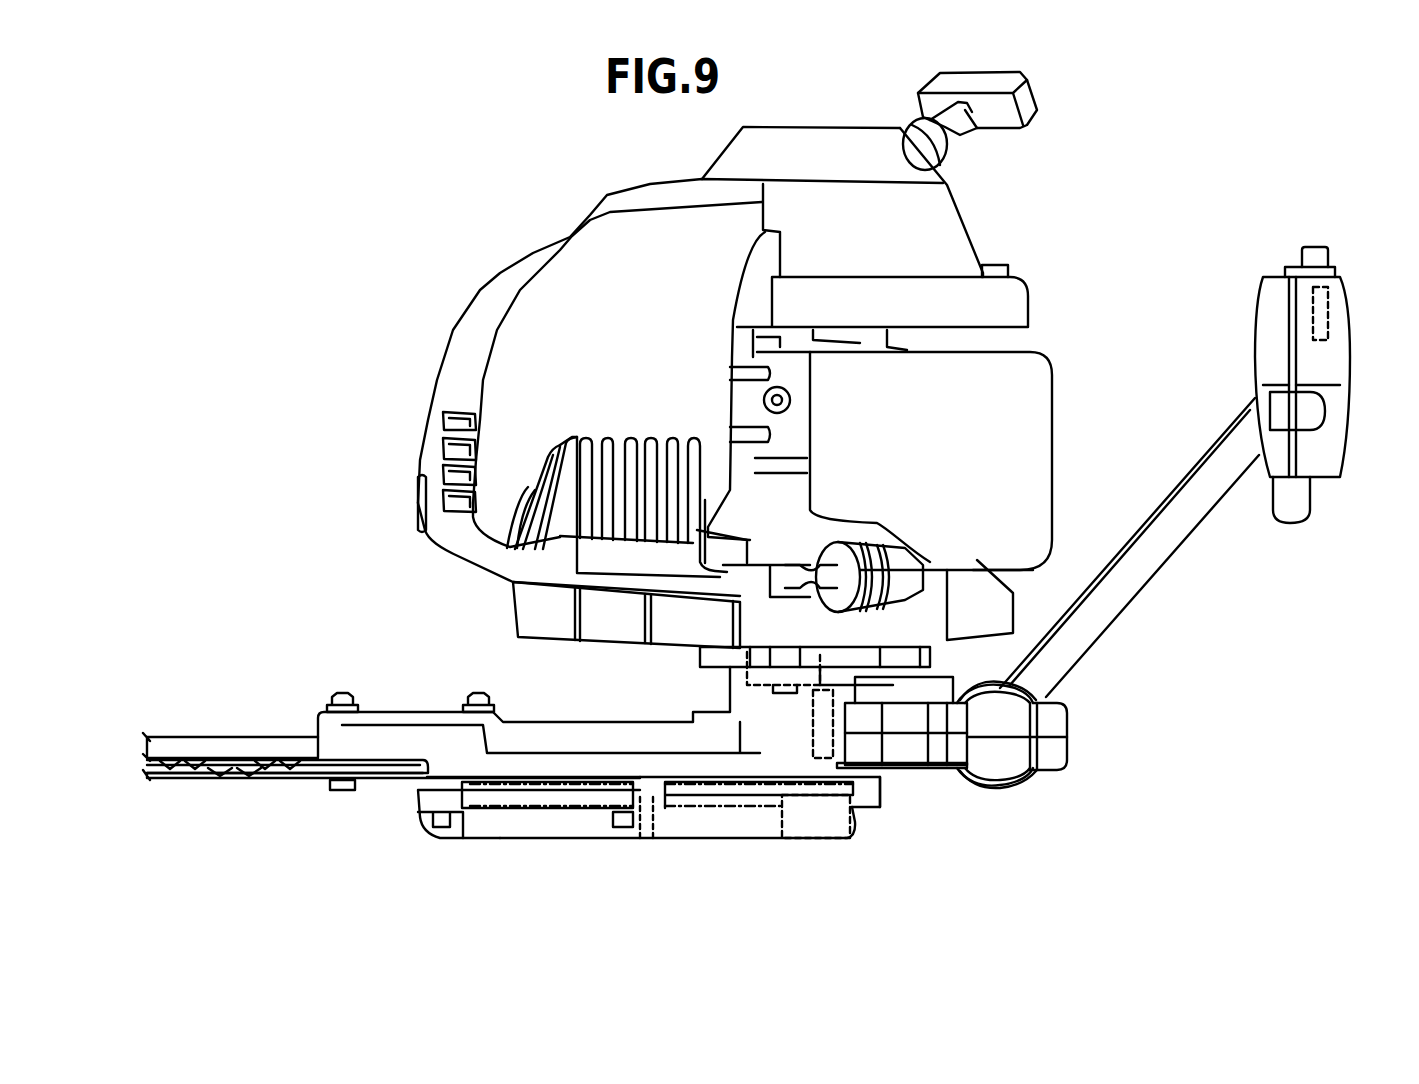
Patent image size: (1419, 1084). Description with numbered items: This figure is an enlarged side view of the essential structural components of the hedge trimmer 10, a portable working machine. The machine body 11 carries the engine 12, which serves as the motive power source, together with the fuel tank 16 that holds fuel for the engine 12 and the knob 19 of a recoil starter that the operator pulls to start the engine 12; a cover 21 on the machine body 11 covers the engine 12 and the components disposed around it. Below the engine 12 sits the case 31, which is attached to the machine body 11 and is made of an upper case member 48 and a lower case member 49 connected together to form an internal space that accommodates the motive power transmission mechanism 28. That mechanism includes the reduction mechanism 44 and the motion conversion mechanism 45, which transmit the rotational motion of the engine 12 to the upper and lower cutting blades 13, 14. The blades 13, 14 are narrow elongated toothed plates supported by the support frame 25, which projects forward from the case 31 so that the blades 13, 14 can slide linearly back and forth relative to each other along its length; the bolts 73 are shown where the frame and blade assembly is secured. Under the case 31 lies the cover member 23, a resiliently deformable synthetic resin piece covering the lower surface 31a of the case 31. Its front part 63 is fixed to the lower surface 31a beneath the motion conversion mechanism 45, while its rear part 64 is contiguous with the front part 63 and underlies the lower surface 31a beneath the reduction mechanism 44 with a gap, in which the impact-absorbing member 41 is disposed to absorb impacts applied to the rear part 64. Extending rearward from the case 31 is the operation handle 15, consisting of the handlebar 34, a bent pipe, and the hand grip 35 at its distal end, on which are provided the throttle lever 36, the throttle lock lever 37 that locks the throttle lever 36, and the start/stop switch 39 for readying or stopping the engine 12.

The hedge trimmer 10 is at (387, 477).
The machine body 11 is at (510, 603).
The engine 12 is at (897, 645).
The upper cutting blade 13 is at (200, 760).
The lower cutting blade 14 is at (248, 775).
The operation handle 15 is at (1190, 540).
The fuel tank 16 is at (1030, 355).
The knob 19 is at (1028, 95).
The cover 21 is at (500, 273).
The cover member 23 is at (547, 845).
The support frame 25 is at (237, 733).
The motive power transmission mechanism 28 is at (657, 874).
The case 31 is at (1195, 660).
The lower surface 31a is at (873, 842).
The handlebar 34 is at (1213, 513).
The hand grip 35 is at (1268, 273).
The throttle lever 36 is at (1310, 500).
The throttle lock lever 37 is at (1322, 287).
The start/stop switch 39 is at (1313, 247).
The impact-absorbing member 41 is at (807, 847).
The reduction mechanism 44 is at (685, 810).
The motion conversion mechanism 45 is at (577, 810).
The upper case member 48 is at (1070, 720).
The lower case member 49 is at (1070, 755).
The front part 63 is at (503, 842).
The rear part 64 is at (760, 842).
The bolt 73 is at (342, 693).